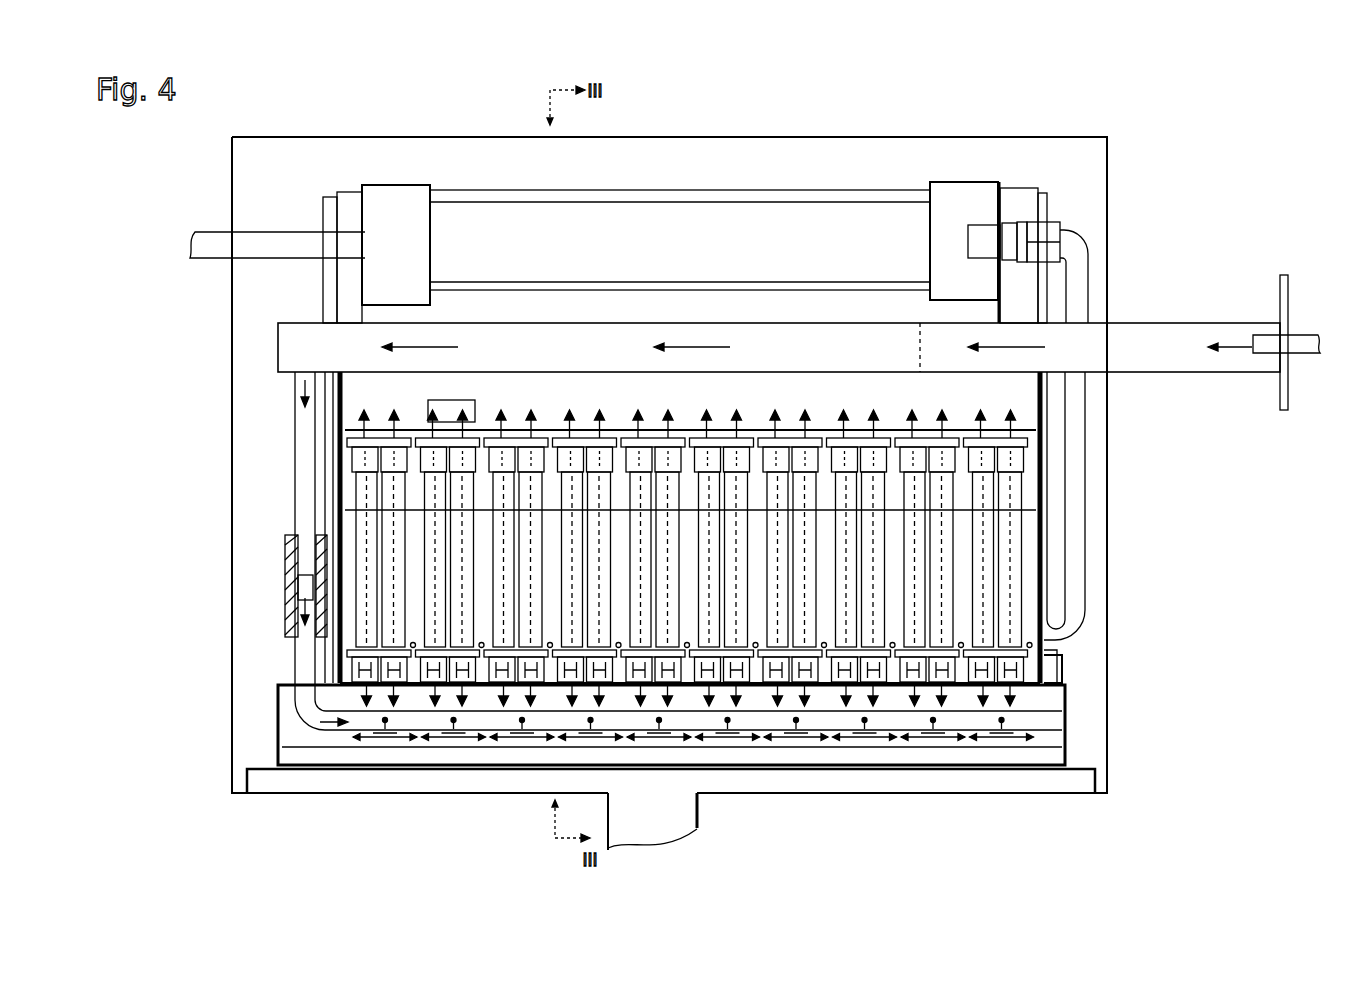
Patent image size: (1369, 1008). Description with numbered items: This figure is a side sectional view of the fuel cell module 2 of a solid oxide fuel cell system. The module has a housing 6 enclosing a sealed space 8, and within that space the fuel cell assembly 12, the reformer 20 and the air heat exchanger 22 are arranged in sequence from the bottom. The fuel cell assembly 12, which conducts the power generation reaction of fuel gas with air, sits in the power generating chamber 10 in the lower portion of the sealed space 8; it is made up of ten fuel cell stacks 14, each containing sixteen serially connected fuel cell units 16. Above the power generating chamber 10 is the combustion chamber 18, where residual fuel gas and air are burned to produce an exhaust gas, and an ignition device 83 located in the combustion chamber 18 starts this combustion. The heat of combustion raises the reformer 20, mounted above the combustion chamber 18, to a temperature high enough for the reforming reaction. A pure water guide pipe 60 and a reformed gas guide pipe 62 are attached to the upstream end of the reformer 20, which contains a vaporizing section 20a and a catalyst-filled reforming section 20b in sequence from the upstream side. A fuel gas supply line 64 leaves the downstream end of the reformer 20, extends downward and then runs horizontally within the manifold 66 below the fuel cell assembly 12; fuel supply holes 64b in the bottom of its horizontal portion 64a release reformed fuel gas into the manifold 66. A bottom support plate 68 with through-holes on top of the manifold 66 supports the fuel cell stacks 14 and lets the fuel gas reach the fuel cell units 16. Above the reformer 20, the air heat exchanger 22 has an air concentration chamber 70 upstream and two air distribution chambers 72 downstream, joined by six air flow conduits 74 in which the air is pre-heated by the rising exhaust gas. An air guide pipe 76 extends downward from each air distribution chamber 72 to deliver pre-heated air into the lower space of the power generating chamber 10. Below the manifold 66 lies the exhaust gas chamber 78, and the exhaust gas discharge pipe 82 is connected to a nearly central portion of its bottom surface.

The fuel cell module 2 is at (1172, 249).
The housing 6 is at (1108, 527).
The sealed space 8 is at (799, 610).
The power generating chamber 10 is at (762, 680).
The fuel cell assembly 12 is at (1108, 558).
The fuel cell stack 14 is at (1108, 558).
The fuel cell unit 16 is at (1030, 580).
The combustion chamber 18 is at (608, 403).
The reformer 20 is at (779, 375).
The vaporizing section 20a is at (1099, 358).
The reforming section 20b is at (777, 358).
The air heat exchanger 22 is at (680, 189).
The air flow conduit 74 is at (822, 190).
The pure water guide pipe 60 is at (1291, 318).
The reformed gas guide pipe 62 is at (1300, 335).
The fuel gas supply line 64 is at (613, 613).
The horizontal portion 64a is at (417, 748).
The fuel supply hole 64b is at (360, 737).
The manifold 66 is at (1066, 742).
The bottom support plate 68 is at (1047, 675).
The air concentration chamber 70 is at (400, 185).
The air distribution chamber 72 is at (972, 182).
The air guide pipe 76 is at (1078, 477).
The exhaust gas chamber 78 is at (1010, 772).
The exhaust gas discharge pipe 82 is at (698, 828).
The ignition device 83 is at (476, 410).